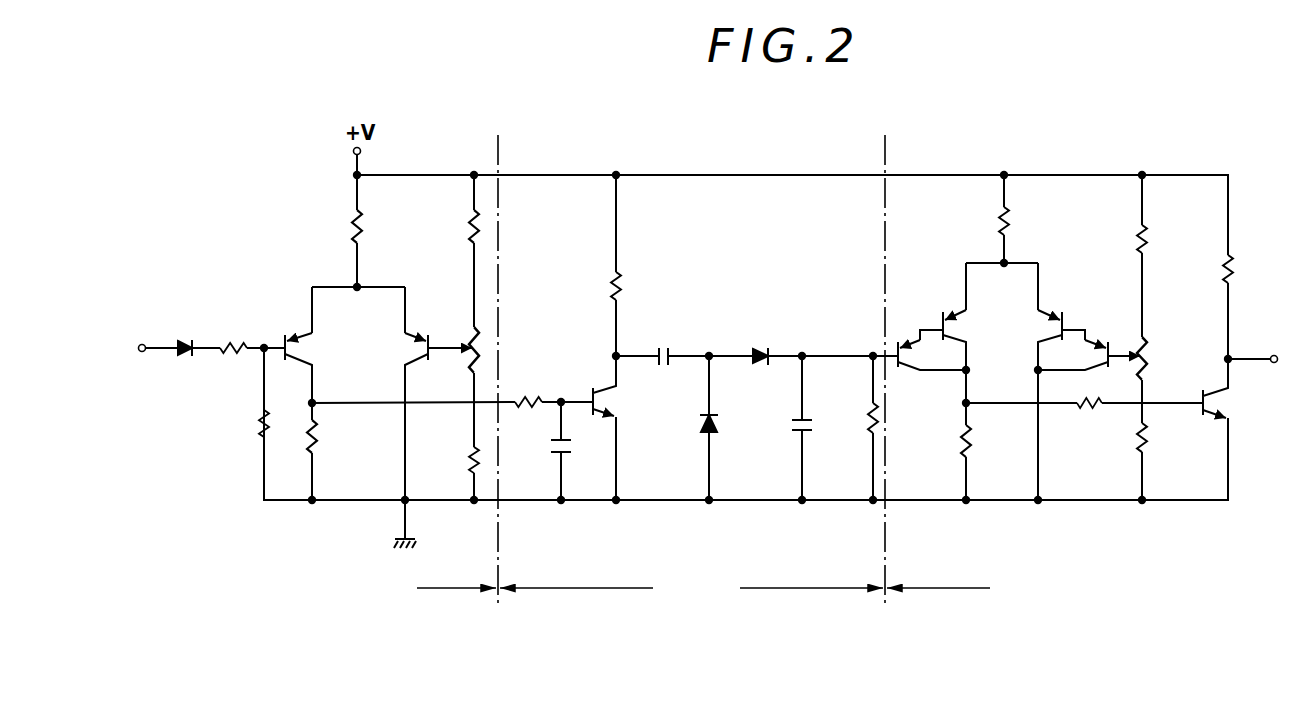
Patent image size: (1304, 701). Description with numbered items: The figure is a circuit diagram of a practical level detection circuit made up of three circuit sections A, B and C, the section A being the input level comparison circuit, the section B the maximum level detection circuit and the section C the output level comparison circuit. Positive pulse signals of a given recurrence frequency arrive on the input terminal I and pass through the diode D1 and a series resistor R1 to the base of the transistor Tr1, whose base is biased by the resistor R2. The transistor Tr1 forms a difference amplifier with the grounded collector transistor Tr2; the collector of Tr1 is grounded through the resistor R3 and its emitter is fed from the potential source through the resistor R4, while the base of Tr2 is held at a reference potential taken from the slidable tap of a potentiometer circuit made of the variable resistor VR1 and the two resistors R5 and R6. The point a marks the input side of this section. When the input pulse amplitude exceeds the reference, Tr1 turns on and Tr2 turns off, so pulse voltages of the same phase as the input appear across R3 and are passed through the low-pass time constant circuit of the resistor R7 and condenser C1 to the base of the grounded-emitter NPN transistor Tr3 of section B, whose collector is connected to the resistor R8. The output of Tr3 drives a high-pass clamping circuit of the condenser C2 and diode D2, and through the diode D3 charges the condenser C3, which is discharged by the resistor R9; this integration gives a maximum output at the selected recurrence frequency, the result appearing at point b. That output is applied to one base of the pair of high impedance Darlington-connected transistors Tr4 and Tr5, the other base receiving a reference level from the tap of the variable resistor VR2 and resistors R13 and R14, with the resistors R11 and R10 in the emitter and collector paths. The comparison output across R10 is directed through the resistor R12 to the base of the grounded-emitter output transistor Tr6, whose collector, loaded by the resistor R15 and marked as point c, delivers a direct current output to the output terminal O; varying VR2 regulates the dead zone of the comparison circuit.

The diode D1 is at (196, 333).
The resistor R1 is at (252, 332).
The resistor R2 is at (252, 424).
The resistor R3 is at (300, 449).
The resistor R4 is at (345, 231).
The resistor R5 is at (462, 251).
The resistor R6 is at (462, 473).
The variable resistor VR1 is at (455, 374).
The transistor Tr1 is at (315, 345).
The grounded collector transistor Tr2 is at (424, 393).
The resistor R7 is at (553, 389).
The condenser C1 is at (549, 451).
The grounded-emitter NPN transistor Tr3 is at (621, 428).
The resistor R8 is at (603, 267).
The condenser C2 is at (662, 344).
The diode D2 is at (695, 428).
The diode D3 is at (755, 344).
The condenser C3 is at (790, 428).
The resistor R9 is at (862, 428).
The Darlington-connected transistor Tr4 is at (934, 318).
The Darlington-connected transistor Tr5 is at (1087, 381).
The resistor R10 is at (951, 435).
The resistor R11 is at (989, 221).
The resistor R12 is at (1084, 393).
The resistor R13 is at (1128, 256).
The resistor R14 is at (1127, 461).
The resistor R15 is at (1214, 307).
The variable resistor VR2 is at (1162, 380).
The output transistor Tr6 is at (1204, 398).
The input terminal I is at (157, 369).
The output terminal O is at (1253, 377).
The circuit point a is at (145, 321).
The circuit point b is at (865, 333).
The circuit point c is at (1206, 343).
The circuit section A is at (447, 589).
The circuit section B is at (691, 589).
The circuit section C is at (948, 589).